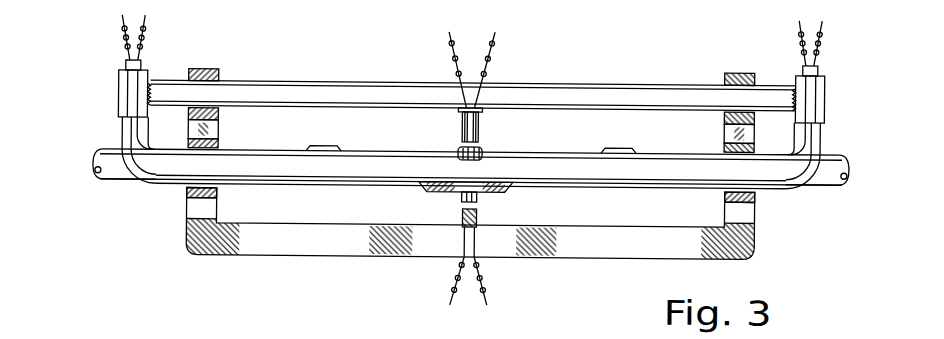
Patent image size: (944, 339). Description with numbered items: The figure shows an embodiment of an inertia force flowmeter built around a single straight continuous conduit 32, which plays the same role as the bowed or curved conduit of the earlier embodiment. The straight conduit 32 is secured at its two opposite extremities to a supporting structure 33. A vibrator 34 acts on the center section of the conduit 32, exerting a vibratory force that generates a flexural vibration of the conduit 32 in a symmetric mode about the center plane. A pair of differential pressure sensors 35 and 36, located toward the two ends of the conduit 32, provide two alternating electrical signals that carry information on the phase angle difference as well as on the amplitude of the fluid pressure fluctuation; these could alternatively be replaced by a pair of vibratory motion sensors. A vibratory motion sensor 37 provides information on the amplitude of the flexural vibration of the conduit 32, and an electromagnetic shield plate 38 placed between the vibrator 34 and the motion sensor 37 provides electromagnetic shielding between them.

The straight continuous conduit 32 is at (392, 164).
The supporting structure 33 is at (299, 241).
The vibrator 34 is at (483, 144).
The differential pressure sensor 35 is at (117, 103).
The differential pressure sensor 36 is at (823, 103).
The vibratory motion sensor 37 is at (483, 206).
The electromagnetic shield plate 38 is at (445, 198).